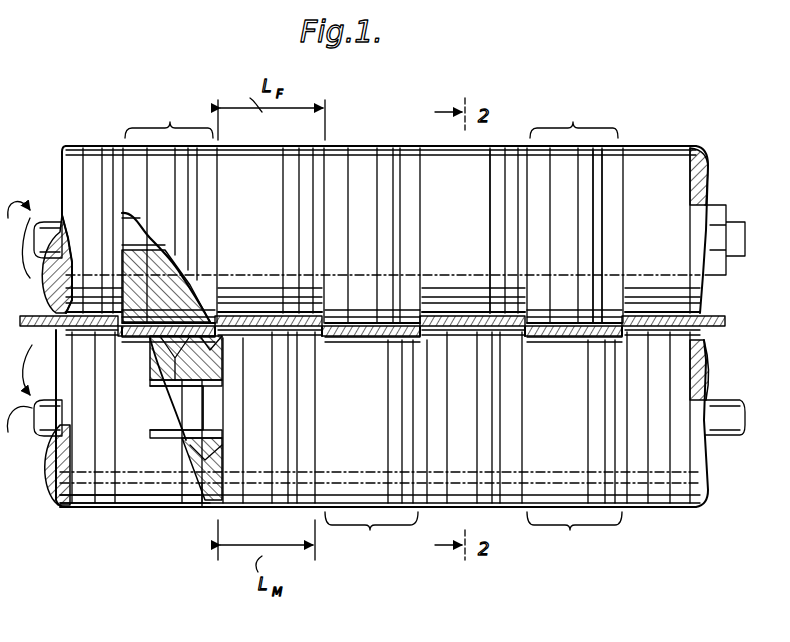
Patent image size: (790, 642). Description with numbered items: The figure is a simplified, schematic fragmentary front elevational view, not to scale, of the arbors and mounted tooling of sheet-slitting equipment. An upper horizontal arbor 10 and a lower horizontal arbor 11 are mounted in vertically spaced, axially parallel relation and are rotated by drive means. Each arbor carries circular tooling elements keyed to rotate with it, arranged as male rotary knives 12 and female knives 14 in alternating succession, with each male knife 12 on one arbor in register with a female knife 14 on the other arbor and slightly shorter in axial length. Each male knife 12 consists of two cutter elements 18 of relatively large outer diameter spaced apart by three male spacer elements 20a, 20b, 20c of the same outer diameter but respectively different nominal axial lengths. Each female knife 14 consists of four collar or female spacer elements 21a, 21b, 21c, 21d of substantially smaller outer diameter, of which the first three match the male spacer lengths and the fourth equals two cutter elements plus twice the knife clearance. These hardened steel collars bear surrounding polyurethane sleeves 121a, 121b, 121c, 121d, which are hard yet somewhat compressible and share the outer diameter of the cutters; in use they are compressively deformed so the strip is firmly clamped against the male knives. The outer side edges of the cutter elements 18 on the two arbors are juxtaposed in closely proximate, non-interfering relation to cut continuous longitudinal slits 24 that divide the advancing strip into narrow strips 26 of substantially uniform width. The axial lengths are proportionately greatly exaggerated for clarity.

The upper horizontal arbor 10 is at (50, 222).
The lower horizontal arbor 11 is at (46, 405).
The male rotary knife 12 is at (170, 122).
The female knife 14 is at (280, 146).
The cutter element 18 is at (107, 150).
The male spacer element 20a is at (598, 220).
The male spacer element 20b is at (593, 195).
The male spacer element 20c is at (556, 172).
The female spacer element 21a is at (205, 438).
The female spacer element 21b is at (205, 395).
The female spacer element 21c is at (188, 428).
The female spacer element 21d is at (172, 398).
The slit 24 is at (112, 335).
The narrow strip 26 is at (250, 316).
The cylindrical sleeve 121a is at (212, 512).
The cylindrical sleeve 121b is at (208, 512).
The cylindrical sleeve 121c is at (192, 508).
The cylindrical sleeve 121d is at (132, 505).